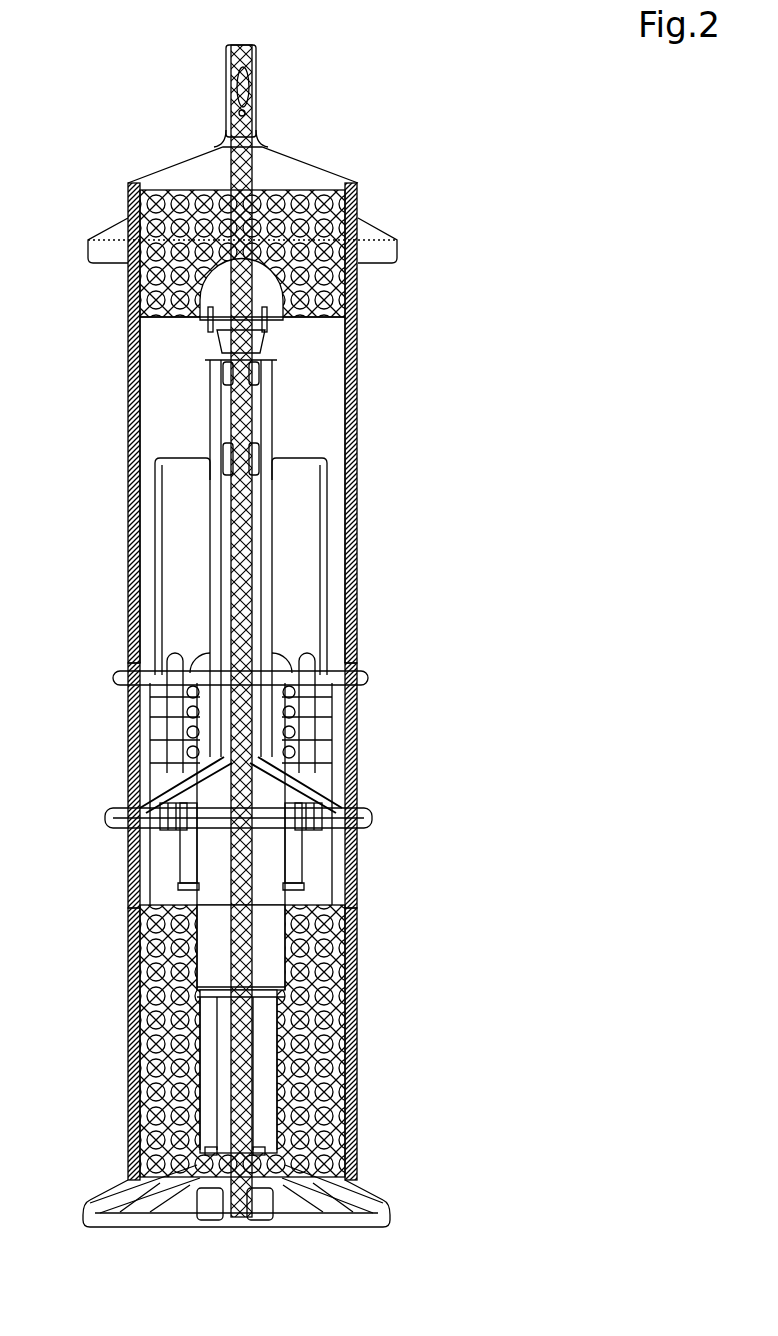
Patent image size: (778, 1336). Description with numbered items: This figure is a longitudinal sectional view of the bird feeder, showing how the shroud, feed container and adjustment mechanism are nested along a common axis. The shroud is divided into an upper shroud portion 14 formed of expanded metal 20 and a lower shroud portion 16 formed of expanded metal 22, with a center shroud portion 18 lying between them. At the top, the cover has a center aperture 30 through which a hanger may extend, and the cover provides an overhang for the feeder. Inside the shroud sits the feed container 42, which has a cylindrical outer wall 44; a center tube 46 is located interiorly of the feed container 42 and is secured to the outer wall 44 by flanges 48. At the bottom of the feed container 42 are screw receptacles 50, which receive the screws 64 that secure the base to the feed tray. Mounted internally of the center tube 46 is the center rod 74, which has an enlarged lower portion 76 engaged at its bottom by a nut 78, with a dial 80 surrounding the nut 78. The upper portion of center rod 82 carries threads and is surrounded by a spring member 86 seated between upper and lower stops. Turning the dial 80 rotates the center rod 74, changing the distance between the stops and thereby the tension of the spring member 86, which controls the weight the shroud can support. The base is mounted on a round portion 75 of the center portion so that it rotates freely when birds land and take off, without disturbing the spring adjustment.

The upper shroud portion 14 is at (417, 510).
The lower shroud portion 16 is at (383, 980).
The center shroud portion 18 is at (97, 736).
The expanded metal 20 is at (358, 306).
The expanded metal 22 is at (353, 1083).
The center aperture 30 is at (255, 137).
The feed container 42 is at (322, 368).
The cylindrical outer wall 44 is at (131, 382).
The center tube 46 is at (358, 472).
The flanges 48 is at (197, 562).
The screw receptacles 50 is at (358, 659).
The screws 64 is at (358, 814).
The center rod 74 is at (263, 907).
The round portion 75 is at (350, 1145).
The enlarged lower portion 76 is at (253, 1060).
The nut 78 is at (203, 1220).
The dial 80 is at (280, 1222).
The upper portion of center rod 82 is at (215, 836).
The spring member 86 is at (232, 877).